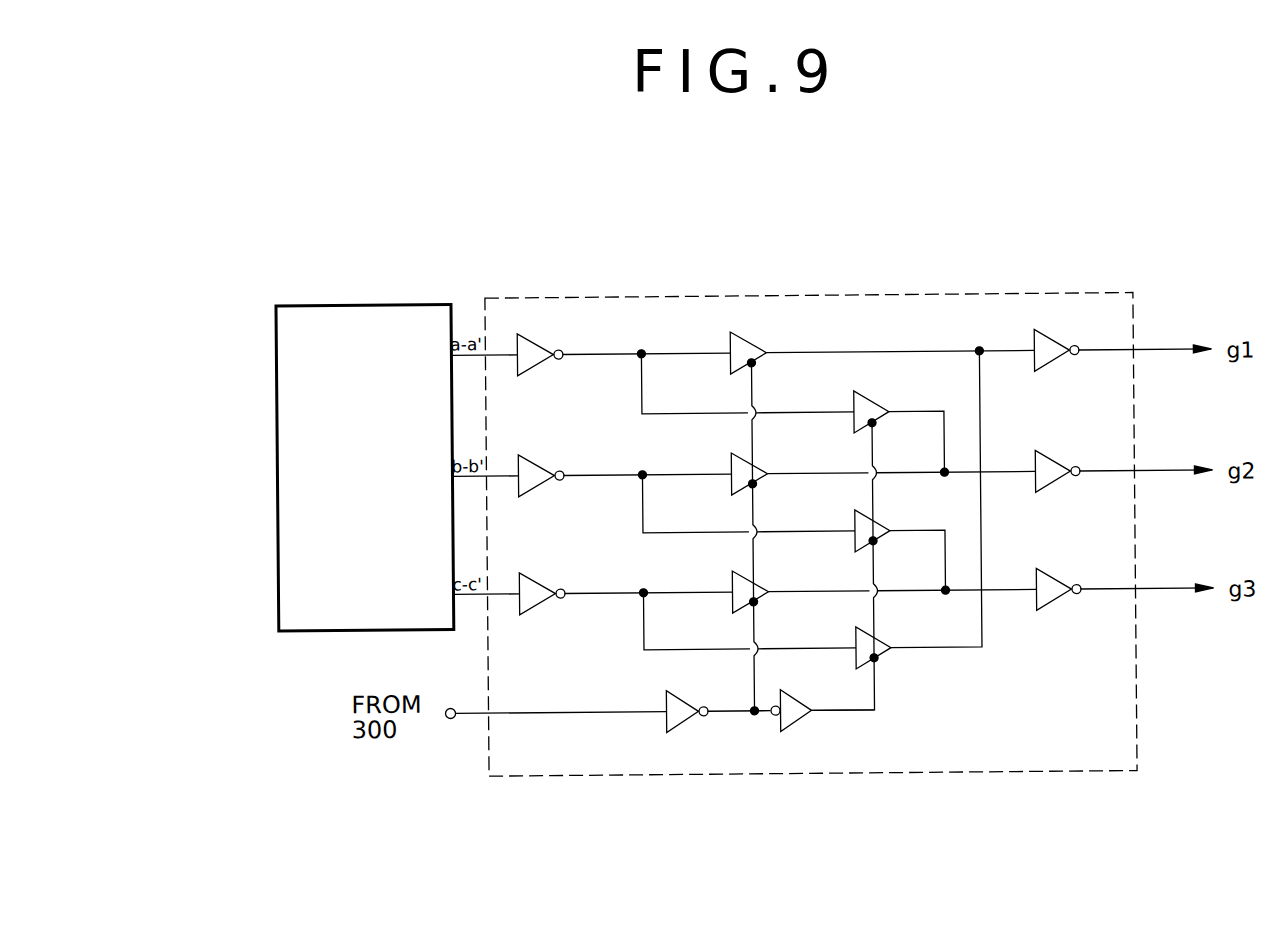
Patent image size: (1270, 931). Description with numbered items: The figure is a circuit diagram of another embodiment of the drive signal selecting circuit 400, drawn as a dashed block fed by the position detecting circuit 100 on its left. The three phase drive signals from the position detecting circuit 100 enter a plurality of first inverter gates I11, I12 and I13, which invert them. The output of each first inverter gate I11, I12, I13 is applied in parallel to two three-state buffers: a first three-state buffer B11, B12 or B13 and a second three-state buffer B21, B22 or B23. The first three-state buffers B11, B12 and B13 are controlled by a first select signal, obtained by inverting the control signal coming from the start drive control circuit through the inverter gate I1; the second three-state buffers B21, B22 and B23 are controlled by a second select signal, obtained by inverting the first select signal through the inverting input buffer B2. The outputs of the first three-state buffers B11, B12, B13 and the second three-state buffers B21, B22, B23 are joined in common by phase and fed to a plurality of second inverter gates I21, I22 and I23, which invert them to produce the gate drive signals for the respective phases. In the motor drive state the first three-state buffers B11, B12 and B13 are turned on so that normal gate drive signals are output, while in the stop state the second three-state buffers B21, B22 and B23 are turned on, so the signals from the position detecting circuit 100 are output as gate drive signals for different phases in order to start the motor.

The position detecting circuit 100 is at (278, 465).
The drive signal selecting circuit 400 is at (752, 294).
The first inverter gate I11 is at (540, 343).
The first inverter gate I12 is at (541, 463).
The first inverter gate I13 is at (544, 586).
The first three-state buffer B11 is at (755, 342).
The first three-state buffer B12 is at (764, 467).
The first three-state buffer B13 is at (765, 587).
The second three-state buffer B21 is at (883, 405).
The second three-state buffer B22 is at (887, 526).
The second three-state buffer B23 is at (888, 644).
The inverter gate I1 is at (687, 705).
The inverting input buffer B2 is at (796, 704).
The second inverter gate I21 is at (1056, 338).
The second inverter gate I22 is at (1060, 462).
The second inverter gate I23 is at (1061, 582).